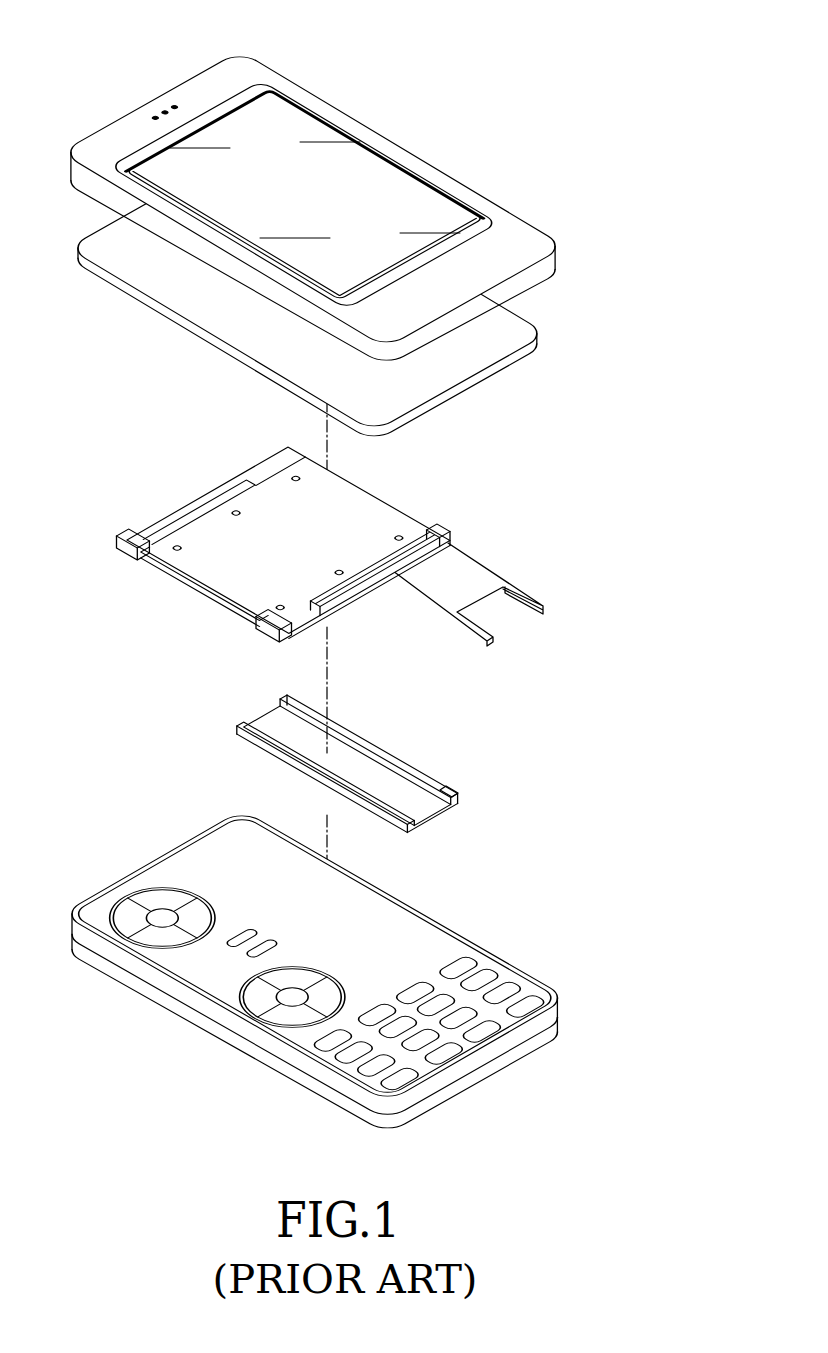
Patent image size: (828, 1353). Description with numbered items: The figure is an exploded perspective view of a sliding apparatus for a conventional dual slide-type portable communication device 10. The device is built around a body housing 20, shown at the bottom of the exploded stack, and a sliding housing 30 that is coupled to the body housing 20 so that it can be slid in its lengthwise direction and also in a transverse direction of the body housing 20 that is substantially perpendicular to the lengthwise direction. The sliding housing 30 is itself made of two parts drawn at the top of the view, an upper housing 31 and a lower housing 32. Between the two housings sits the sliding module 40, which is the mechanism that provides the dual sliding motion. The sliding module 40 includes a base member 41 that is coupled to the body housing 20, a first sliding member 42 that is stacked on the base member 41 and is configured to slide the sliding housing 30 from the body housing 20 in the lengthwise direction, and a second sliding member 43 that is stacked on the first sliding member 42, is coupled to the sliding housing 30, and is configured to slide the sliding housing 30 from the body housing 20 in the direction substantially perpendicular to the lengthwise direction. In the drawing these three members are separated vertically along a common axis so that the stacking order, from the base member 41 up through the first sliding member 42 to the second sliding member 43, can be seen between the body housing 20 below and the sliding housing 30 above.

The dual slide-type portable communication device 10 is at (385, 567).
The body housing 20 is at (195, 1013).
The sliding housing 30 is at (385, 246).
The upper housing 31 is at (527, 242).
The lower housing 32 is at (515, 328).
The sliding module 40 is at (395, 640).
The base member 41 is at (428, 764).
The first sliding member 42 is at (475, 575).
The second sliding member 43 is at (385, 522).